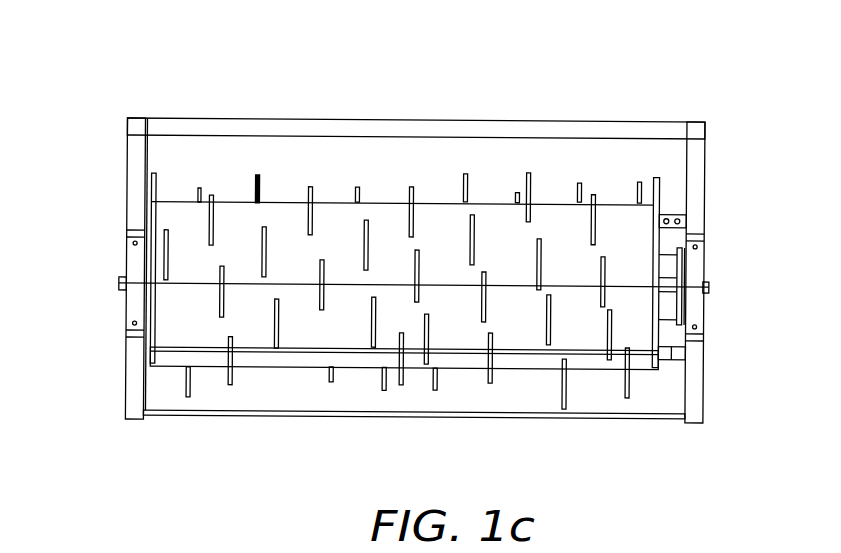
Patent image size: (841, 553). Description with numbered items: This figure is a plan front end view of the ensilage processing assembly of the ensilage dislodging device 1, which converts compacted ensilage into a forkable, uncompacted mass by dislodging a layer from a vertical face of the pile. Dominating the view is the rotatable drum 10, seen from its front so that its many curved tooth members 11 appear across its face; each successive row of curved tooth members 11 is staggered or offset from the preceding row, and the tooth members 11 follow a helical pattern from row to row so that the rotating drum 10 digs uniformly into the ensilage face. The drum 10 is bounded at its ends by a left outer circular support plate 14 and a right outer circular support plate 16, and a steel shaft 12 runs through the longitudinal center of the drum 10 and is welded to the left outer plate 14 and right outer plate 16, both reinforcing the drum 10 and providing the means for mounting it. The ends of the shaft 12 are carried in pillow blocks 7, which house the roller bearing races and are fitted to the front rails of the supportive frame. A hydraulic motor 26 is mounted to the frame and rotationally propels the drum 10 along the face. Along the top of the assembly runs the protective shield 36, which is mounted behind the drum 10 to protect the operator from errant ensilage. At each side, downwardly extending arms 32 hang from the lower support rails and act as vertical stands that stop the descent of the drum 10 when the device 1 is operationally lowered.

The ensilage dislodging device 1 is at (240, 83).
The pillow block 7 is at (705, 247).
The rotatable drum 10 is at (450, 352).
The curved tooth members 11 is at (278, 347).
The shaft 12 is at (120, 282).
The left outer circular support plate 14 is at (660, 207).
The right outer circular support plate 16 is at (152, 208).
The hydraulic motor 26 is at (675, 213).
The downwardly extending arms 32 is at (133, 396).
The protective shield 36 is at (548, 128).